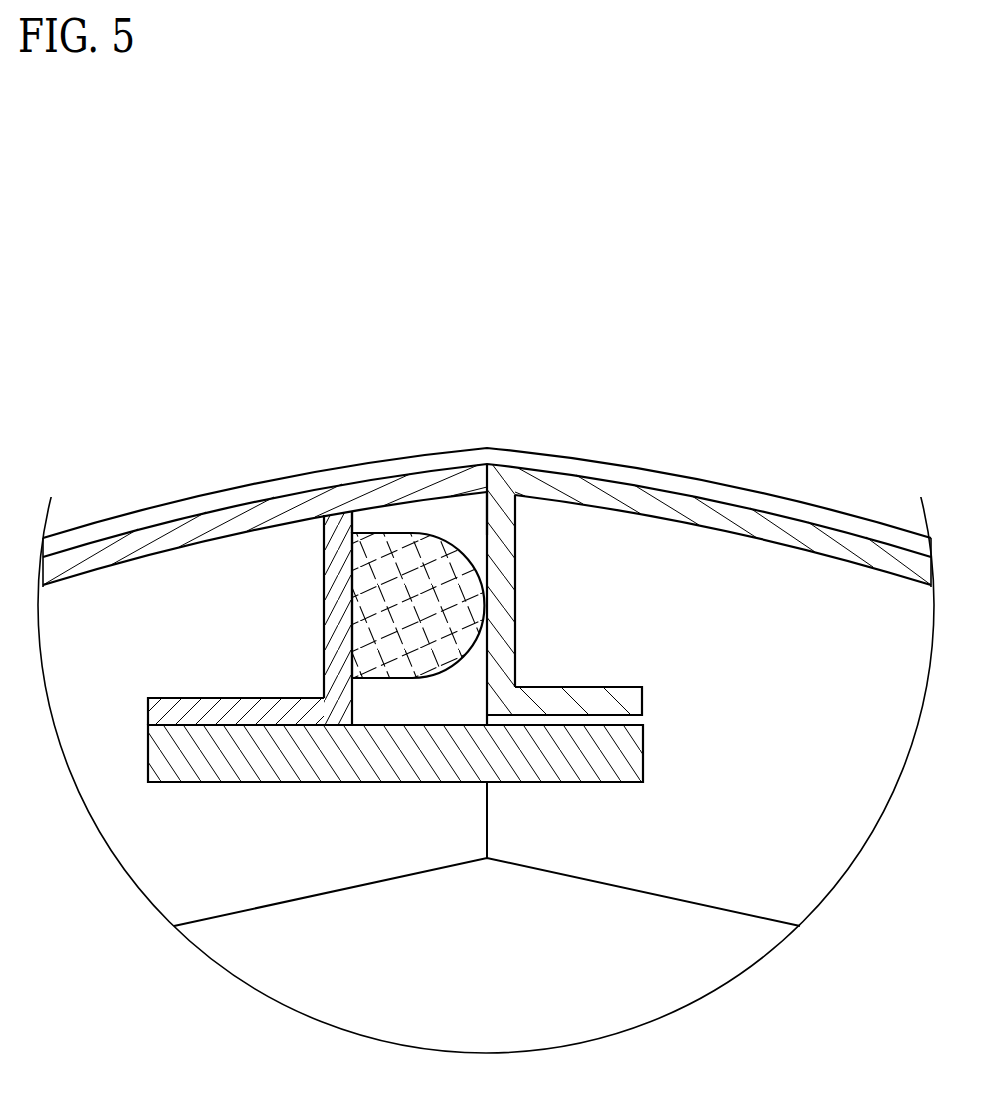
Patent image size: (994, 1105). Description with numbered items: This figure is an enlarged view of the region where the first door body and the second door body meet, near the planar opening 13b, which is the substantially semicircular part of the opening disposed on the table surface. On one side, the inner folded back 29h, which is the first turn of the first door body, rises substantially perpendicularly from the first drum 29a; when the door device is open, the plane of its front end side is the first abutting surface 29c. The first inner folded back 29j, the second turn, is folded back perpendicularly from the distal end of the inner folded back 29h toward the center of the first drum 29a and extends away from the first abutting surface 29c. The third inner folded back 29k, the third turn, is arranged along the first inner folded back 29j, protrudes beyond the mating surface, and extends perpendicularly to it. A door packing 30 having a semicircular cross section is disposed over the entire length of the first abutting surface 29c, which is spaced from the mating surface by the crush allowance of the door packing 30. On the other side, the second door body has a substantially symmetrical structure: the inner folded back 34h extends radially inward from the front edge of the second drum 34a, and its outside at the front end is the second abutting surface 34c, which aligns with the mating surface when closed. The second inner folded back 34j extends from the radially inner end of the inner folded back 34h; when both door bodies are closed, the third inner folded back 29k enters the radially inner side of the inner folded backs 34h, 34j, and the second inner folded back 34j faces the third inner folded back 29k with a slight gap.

The planar opening 13b is at (841, 526).
The first drum 29a is at (217, 512).
The first abutting surface 29c is at (361, 529).
The inner folded back 29h is at (323, 607).
The first inner folded back 29j is at (192, 697).
The third inner folded back 29k is at (281, 783).
The door packing 30 is at (398, 678).
The second drum 34a is at (743, 508).
The second abutting surface 34c is at (478, 537).
The inner folded back 34h is at (516, 582).
The second inner folded back 34j is at (603, 687).